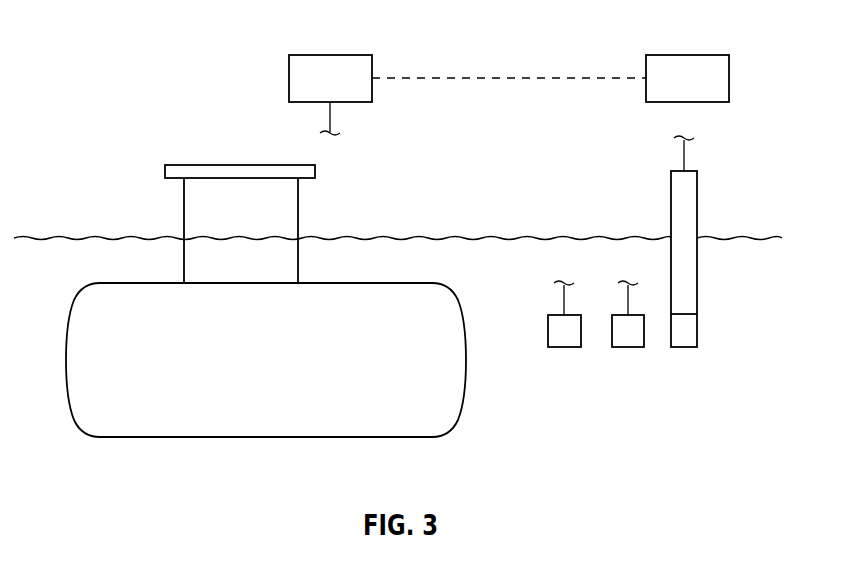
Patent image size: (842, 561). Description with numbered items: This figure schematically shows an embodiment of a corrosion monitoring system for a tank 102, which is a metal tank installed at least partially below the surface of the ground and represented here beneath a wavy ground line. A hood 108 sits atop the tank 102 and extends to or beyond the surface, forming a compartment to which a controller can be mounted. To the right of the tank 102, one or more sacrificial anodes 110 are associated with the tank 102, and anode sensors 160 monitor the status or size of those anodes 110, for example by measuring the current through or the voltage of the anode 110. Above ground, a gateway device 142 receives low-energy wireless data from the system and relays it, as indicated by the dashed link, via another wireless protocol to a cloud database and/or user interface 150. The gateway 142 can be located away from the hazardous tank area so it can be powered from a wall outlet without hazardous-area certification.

The tank 102 is at (130, 430).
The hood 108 is at (212, 187).
The sacrificial anode 110 is at (628, 347).
The gateway device 142 is at (352, 91).
The cloud database and/or user interface 150 is at (709, 91).
The anode sensor 160 is at (563, 347).